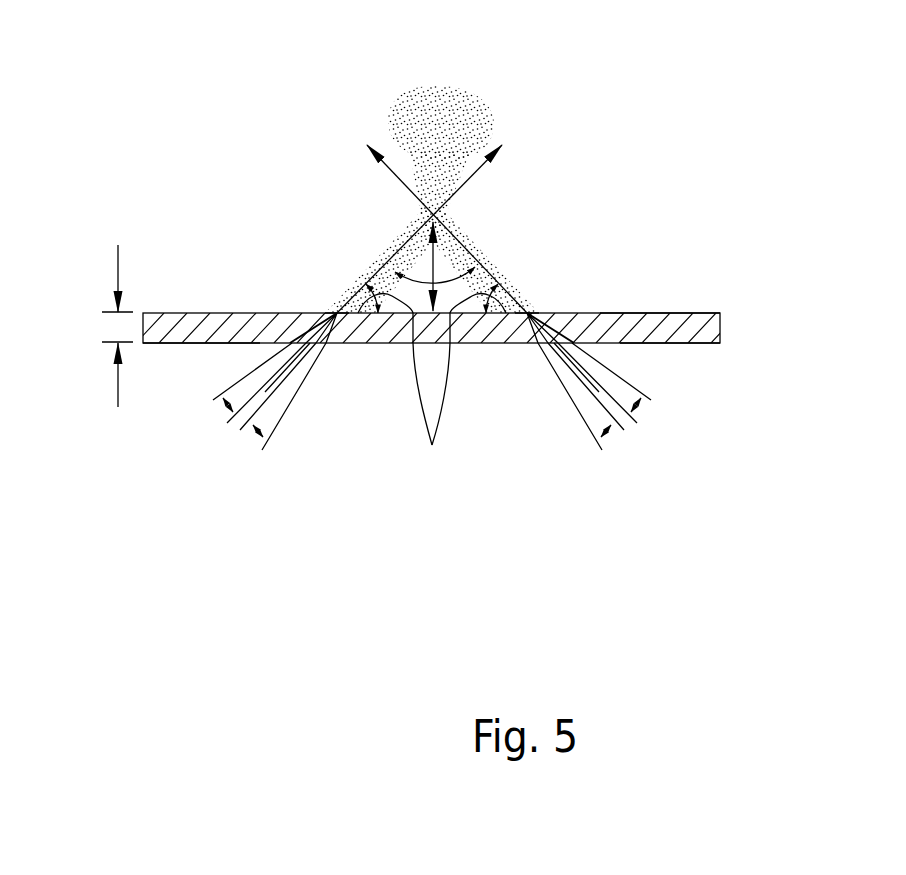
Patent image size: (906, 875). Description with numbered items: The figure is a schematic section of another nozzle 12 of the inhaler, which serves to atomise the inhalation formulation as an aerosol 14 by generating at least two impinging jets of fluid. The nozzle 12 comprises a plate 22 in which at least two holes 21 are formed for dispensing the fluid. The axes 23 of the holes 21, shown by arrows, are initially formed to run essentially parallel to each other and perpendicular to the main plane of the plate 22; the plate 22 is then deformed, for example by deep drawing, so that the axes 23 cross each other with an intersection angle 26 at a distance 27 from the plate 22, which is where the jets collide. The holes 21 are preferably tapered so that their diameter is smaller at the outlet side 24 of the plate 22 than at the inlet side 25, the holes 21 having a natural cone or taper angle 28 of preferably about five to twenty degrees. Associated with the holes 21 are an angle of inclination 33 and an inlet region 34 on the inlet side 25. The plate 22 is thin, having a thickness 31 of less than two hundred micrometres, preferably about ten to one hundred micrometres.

The nozzle 12 is at (200, 263).
The aerosol 14 is at (457, 97).
The hole 21 is at (337, 312).
The plate 22 is at (197, 343).
The axis 23 is at (383, 167).
The outlet side 24 is at (670, 313).
The inlet side 25 is at (697, 343).
The intersection angle 26 is at (416, 276).
The distance of intersection from plate 27 is at (436, 253).
The cone or taper angle 28 is at (228, 415).
The thickness 31 is at (104, 328).
The angle of inclination 33 is at (432, 387).
The inlet region 34 is at (333, 343).